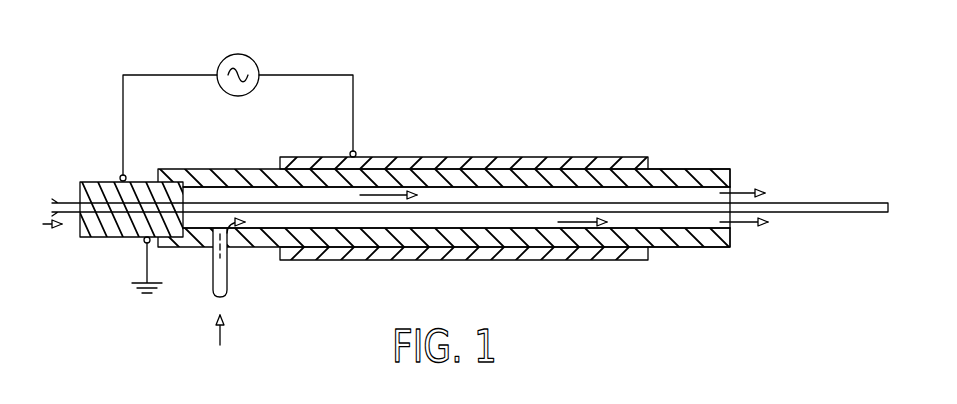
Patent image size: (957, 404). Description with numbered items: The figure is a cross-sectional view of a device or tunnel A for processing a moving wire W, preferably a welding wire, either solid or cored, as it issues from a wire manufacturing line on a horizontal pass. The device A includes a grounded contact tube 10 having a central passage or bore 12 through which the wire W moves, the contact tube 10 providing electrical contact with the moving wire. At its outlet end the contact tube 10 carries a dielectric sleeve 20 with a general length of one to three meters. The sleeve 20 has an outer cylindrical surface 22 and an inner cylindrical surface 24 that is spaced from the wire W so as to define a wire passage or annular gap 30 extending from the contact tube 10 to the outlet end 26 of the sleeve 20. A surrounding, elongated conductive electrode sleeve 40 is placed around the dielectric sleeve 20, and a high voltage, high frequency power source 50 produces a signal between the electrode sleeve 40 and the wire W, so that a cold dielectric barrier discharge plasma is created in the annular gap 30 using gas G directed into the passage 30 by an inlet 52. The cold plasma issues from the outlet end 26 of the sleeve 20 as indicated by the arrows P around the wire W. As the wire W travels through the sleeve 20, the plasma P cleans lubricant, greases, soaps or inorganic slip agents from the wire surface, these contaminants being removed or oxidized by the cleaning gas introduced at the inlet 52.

The contact tube 10 is at (99, 181).
The central passage 12 is at (112, 205).
The dielectric sleeve 20 is at (663, 165).
The outer cylindrical surface 22 is at (707, 168).
The inner cylindrical surface 24 is at (681, 228).
The outlet end 26 is at (732, 240).
The annular gap 30 is at (538, 222).
The conductive electrode sleeve 40 is at (485, 165).
The power source 50 is at (250, 58).
The inlet 52 is at (228, 284).
The device A is at (583, 143).
The plasma P is at (757, 190).
The wire W is at (840, 203).
The gas G is at (220, 328).